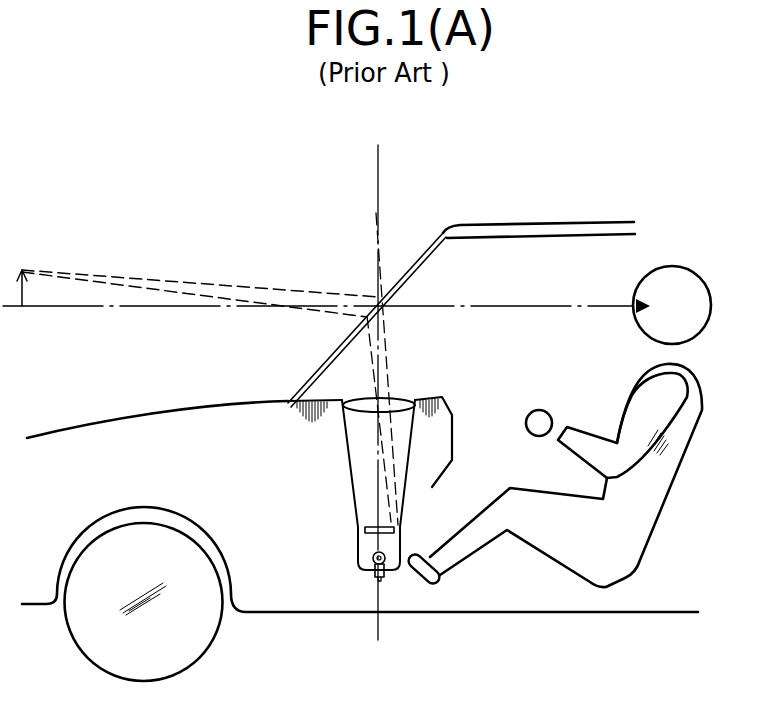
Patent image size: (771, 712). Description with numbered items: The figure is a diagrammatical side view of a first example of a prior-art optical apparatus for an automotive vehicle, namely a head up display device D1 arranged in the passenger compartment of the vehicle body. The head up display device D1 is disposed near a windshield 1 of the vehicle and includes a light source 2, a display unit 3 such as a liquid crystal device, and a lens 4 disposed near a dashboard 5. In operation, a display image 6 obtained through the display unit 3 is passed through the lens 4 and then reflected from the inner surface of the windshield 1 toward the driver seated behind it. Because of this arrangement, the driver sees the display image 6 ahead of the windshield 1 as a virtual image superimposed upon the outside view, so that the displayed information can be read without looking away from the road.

The windshield 1 is at (421, 252).
The light source 2 is at (385, 575).
The display unit 3 is at (358, 535).
The lens 4 is at (402, 403).
The dashboard 5 is at (433, 397).
The display image 6 is at (403, 513).
The head up display device D1 is at (360, 440).